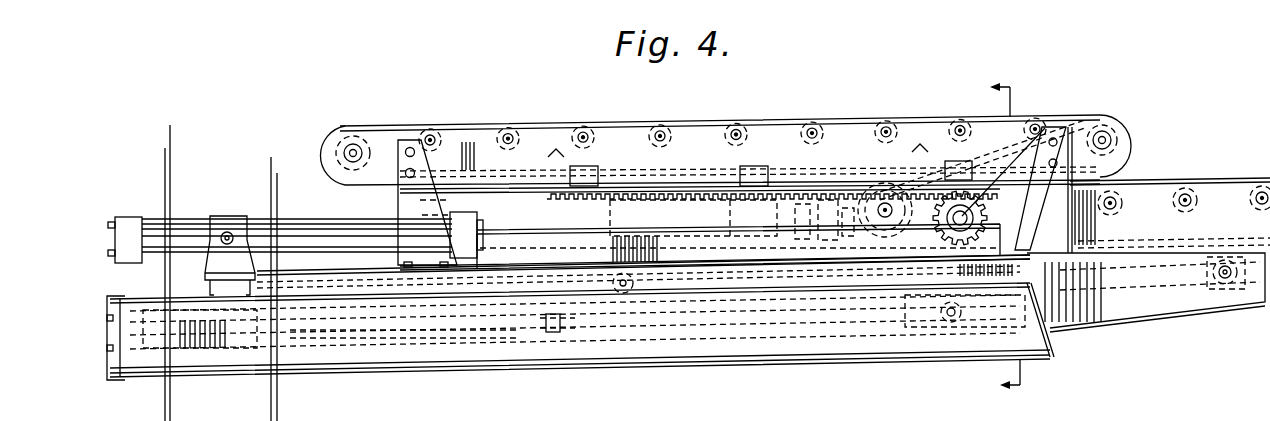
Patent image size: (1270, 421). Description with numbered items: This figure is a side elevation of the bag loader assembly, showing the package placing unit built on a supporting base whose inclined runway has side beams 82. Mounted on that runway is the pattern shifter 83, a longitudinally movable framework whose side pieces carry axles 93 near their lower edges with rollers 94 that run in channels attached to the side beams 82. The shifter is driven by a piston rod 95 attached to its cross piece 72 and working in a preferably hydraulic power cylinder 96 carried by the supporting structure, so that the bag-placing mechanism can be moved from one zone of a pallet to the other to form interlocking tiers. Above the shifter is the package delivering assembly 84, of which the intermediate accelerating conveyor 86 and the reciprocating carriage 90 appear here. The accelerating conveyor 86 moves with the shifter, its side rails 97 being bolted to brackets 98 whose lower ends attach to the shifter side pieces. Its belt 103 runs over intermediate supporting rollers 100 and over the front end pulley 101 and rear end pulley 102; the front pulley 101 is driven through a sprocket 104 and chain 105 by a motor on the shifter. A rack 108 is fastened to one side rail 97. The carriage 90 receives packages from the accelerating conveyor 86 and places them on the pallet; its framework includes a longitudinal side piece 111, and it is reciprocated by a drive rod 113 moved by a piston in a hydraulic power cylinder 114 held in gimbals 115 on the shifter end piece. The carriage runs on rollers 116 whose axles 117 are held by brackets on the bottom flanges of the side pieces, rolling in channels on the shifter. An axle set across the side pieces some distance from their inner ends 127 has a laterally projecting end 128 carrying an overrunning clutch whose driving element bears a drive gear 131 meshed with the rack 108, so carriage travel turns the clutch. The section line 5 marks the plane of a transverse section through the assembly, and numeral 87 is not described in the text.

The section line 5- 5 is at (1019, 237).
The cross piece 72 is at (578, 318).
The side beams 82 is at (615, 357).
The pattern shifter 83 is at (1148, 322).
The package delivering assembly 84 is at (322, 150).
The intermediate accelerating conveyor 86 is at (452, 122).
The frame rail 87 is at (333, 372).
The reciprocating conveyor or carriage 90 is at (1206, 178).
The axles 93 is at (966, 311).
The rollers 94 is at (940, 312).
The piston rod 95 is at (432, 330).
The hydraulic power cylinder 96 is at (246, 340).
The side rails 97 is at (700, 171).
The brackets 98 is at (398, 204).
The intermediate supporting rollers 100 is at (515, 135).
The front end pulley 101 is at (1130, 137).
The rear end pulley 102 is at (342, 140).
The belt 103 is at (620, 125).
The sprocket 104 is at (1085, 120).
The chain 105 is at (1088, 166).
The rack 108 is at (598, 201).
The side piece 111 is at (1184, 209).
The drive rod 113 is at (577, 238).
The hydraulic power cylinder 114 is at (298, 228).
The gimbals 115 is at (236, 206).
The rollers 116 is at (1208, 288).
The axles 117 is at (1210, 272).
The inner ends 127 is at (625, 232).
The laterally projecting end 128 is at (953, 263).
The drive gear 131 is at (897, 190).